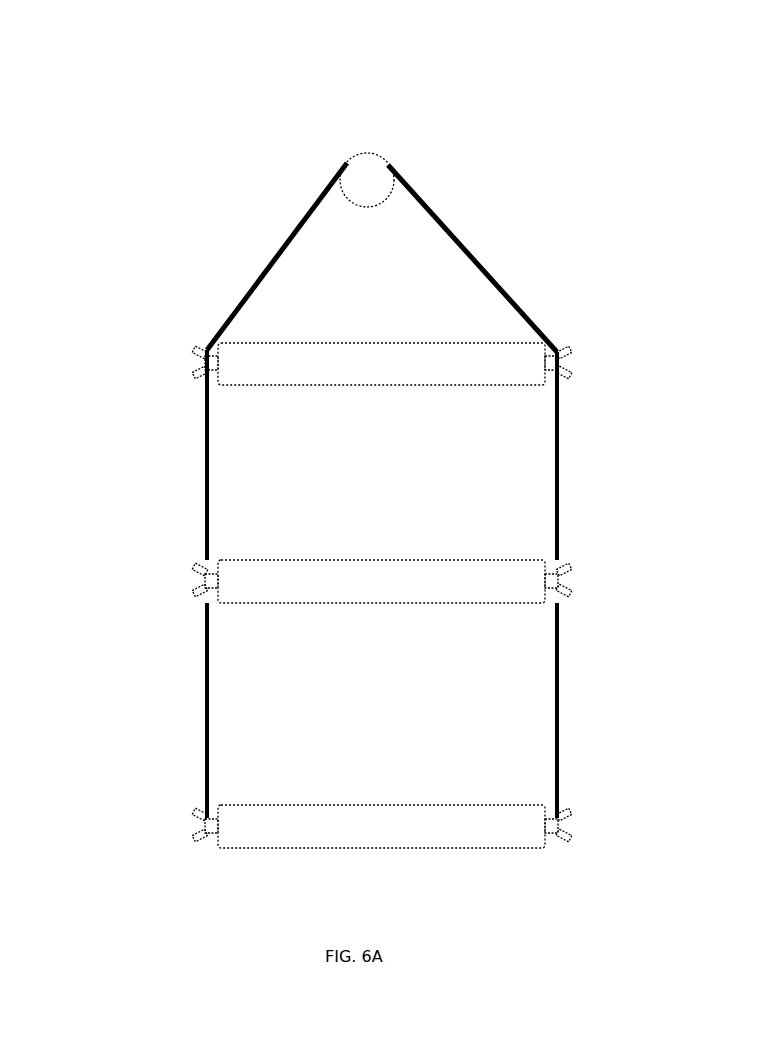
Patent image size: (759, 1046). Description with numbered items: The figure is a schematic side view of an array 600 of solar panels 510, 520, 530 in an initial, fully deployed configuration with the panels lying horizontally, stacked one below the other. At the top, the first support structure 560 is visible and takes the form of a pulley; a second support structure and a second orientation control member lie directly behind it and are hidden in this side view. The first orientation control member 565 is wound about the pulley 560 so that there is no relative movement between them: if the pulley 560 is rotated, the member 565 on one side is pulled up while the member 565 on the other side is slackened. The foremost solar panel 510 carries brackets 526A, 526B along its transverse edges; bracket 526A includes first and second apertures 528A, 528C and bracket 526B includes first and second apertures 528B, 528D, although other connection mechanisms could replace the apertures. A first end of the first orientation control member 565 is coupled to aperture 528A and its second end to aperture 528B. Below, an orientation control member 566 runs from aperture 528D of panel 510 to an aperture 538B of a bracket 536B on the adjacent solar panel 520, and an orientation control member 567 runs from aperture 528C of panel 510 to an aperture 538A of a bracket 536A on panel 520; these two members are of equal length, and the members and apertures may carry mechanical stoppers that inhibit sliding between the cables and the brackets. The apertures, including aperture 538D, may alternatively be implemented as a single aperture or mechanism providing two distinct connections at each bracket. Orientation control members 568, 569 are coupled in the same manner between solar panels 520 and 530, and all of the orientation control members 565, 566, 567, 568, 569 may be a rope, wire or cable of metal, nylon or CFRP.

The array 600 is at (321, 136).
The first support structure 560 is at (373, 168).
The first orientation control member 565 is at (280, 247).
The orientation control member 566 is at (205, 472).
The orientation control member 567 is at (557, 498).
The orientation control member 568 is at (205, 700).
The orientation control member 569 is at (557, 712).
The solar panel 510 is at (273, 363).
The solar panel 520 is at (282, 578).
The solar panel 530 is at (298, 822).
The bracket 526A is at (582, 358).
The bracket 526B is at (188, 367).
The first aperture 528A is at (555, 355).
The first aperture 528B is at (203, 357).
The second aperture 528C is at (562, 368).
The second aperture 528D is at (203, 375).
The bracket 536A is at (584, 585).
The bracket 536B is at (153, 593).
The aperture 538A is at (560, 573).
The aperture 538B is at (207, 578).
The aperture 538D is at (205, 597).